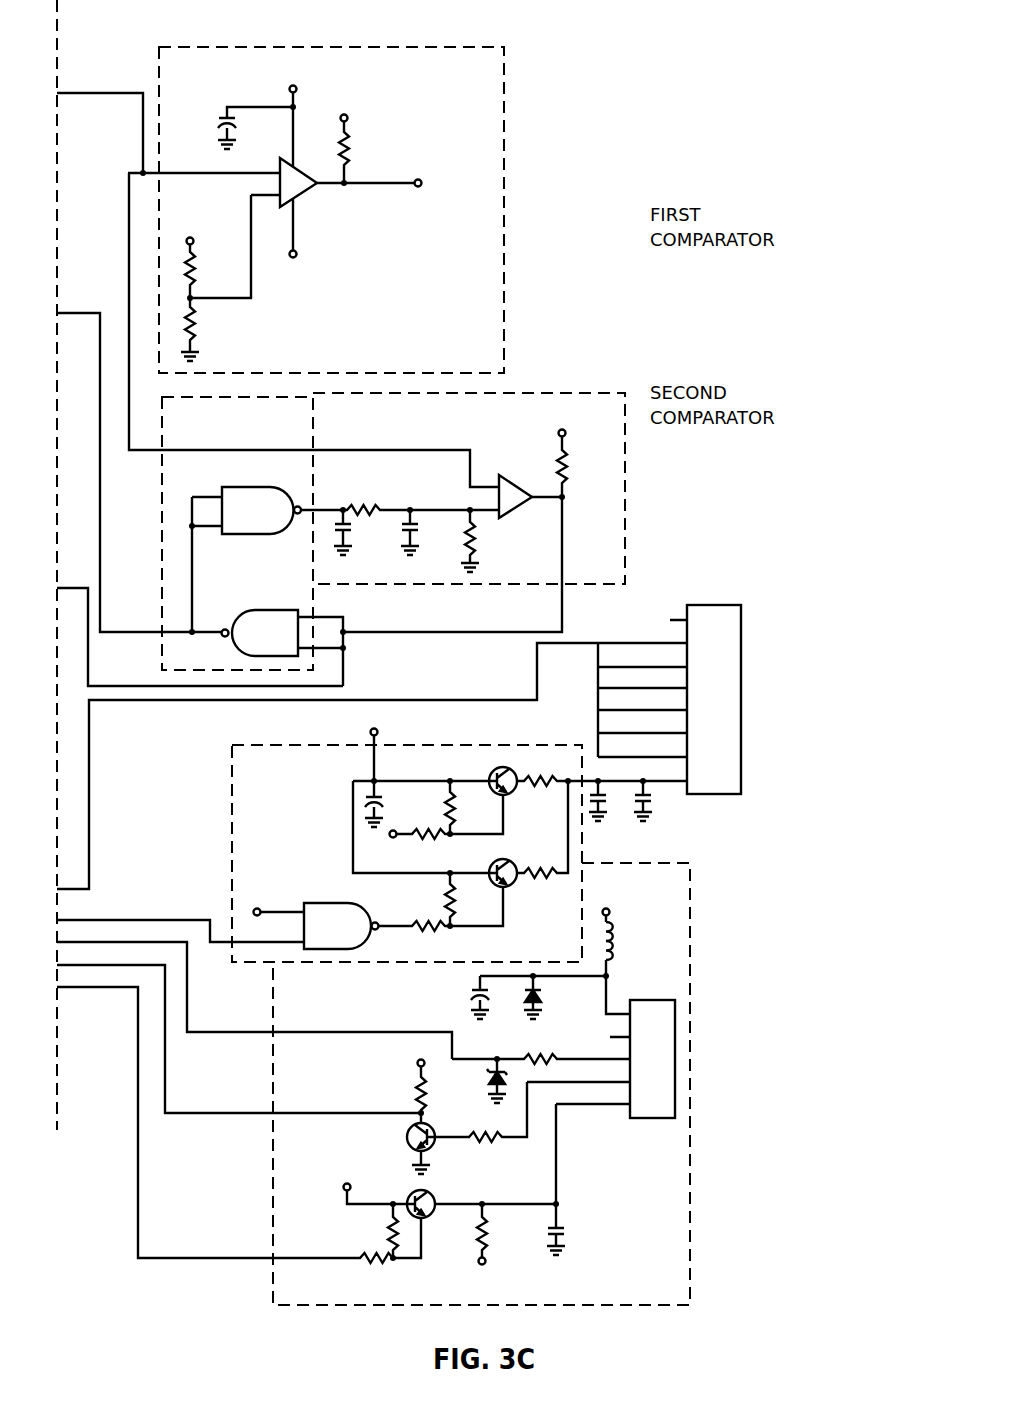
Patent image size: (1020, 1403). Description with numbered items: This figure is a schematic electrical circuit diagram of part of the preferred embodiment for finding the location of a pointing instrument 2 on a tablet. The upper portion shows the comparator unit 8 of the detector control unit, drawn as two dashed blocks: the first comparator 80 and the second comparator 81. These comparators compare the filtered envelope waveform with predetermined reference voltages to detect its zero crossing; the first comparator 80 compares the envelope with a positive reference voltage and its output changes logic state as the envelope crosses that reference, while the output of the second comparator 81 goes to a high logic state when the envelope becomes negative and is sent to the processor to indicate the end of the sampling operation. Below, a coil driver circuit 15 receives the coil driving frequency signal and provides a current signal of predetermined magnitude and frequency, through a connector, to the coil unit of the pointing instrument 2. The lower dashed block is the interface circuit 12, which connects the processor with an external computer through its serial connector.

The comparator unit 8 is at (476, 366).
The second comparator 81 is at (477, 319).
The first comparator 80 is at (676, 262).
The coil driver circuit 15 is at (255, 806).
The interface circuit 12 is at (673, 938).
The pointing instrument 2 is at (748, 700).